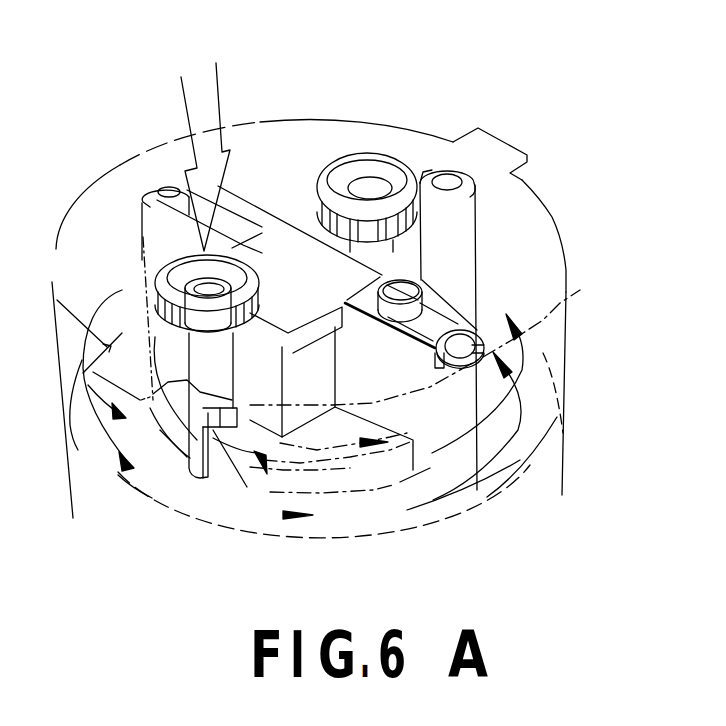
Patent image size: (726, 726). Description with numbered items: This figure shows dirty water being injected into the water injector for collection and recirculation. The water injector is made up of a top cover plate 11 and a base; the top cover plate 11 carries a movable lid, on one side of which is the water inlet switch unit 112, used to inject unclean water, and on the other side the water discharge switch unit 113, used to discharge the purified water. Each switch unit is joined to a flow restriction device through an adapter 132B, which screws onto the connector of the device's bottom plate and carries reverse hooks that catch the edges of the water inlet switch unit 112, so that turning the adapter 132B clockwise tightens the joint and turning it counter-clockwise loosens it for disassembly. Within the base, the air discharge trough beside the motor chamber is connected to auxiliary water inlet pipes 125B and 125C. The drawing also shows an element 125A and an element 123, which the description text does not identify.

The top cover plate 11 is at (123, 182).
The water inlet switch unit 112 is at (216, 276).
The water discharge switch unit 113 is at (362, 170).
The post 123 is at (222, 368).
The first pin 125A is at (448, 180).
The auxiliary water inlet pipe 125B is at (462, 343).
The auxiliary water inlet pipe 125C is at (168, 188).
The adapter 132B is at (148, 278).